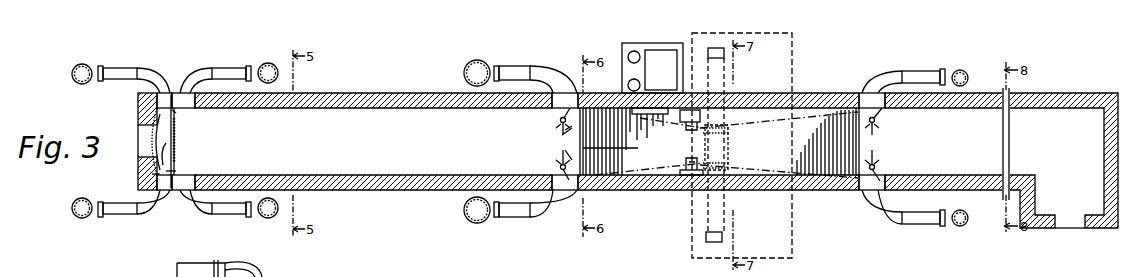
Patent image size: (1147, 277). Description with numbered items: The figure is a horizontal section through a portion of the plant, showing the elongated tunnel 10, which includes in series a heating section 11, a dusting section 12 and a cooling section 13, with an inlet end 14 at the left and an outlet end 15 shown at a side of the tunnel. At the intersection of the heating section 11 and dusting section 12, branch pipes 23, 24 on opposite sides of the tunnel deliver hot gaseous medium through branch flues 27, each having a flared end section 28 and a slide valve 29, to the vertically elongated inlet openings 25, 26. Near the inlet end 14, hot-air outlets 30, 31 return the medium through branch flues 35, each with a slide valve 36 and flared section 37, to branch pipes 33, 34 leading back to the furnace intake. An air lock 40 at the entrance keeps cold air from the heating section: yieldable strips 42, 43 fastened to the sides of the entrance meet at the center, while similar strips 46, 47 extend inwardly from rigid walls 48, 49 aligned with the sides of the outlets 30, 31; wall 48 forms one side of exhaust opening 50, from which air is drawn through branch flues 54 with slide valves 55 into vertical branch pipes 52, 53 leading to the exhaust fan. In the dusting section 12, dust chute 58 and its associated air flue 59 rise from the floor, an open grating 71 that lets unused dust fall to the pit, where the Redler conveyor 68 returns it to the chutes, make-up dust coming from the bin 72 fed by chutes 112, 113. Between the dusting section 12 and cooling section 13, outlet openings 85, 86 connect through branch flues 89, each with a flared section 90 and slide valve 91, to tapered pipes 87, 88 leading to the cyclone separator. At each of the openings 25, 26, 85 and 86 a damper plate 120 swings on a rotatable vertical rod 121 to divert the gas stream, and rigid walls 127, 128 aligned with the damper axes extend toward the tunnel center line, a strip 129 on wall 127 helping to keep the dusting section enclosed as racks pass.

The tunnel 10 is at (392, 93).
The heating section 11 is at (367, 173).
The dusting section 12 is at (640, 178).
The cooling section 13 is at (1050, 113).
The inlet end 14 is at (145, 146).
The outlet end 15 is at (1070, 222).
The branch pipe 23 is at (464, 70).
The branch pipe 24 is at (464, 212).
The inlet opening 25 is at (562, 92).
The inlet opening 26 is at (580, 190).
The branch flue 27 is at (517, 66).
The end section 28 is at (549, 66).
The slide valve 29 is at (497, 65).
The hot-air outlet 30 is at (182, 92).
The hot-air outlet 31 is at (168, 192).
The branch pipe 33 is at (268, 62).
The branch pipe 34 is at (268, 190).
The branch flue 35 is at (222, 68).
The slide valve 36 is at (248, 66).
The flared section 37 is at (188, 200).
The air lock 40 is at (178, 172).
The strip 42 is at (140, 126).
The strip 43 is at (145, 153).
The strip 46 is at (178, 136).
The strip 47 is at (176, 152).
The wall 48 is at (176, 113).
The wall 49 is at (160, 175).
The exhaust opening 50 is at (164, 92).
The branch pipe 52 is at (73, 68).
The branch pipe 53 is at (72, 204).
The branch flue 54 is at (125, 68).
The slide valve 55 is at (100, 66).
The dust chute 58 is at (684, 160).
The air flue 59 is at (690, 182).
The Redler conveyor 68 is at (722, 243).
The open grating 71 is at (622, 190).
The bin 72 is at (646, 48).
The outlet opening 85 is at (868, 190).
The outlet opening 86 is at (860, 95).
The pipe 87 is at (958, 227).
The pipe 88 is at (960, 70).
The branch flue 89 is at (916, 70).
The flared section 90 is at (870, 86).
The slide valve 91 is at (940, 66).
The chute 112 is at (628, 84).
The chute 113 is at (630, 50).
The damper plate 120 is at (566, 122).
The rotatable vertical rod 121 is at (570, 122).
The wall 127 is at (566, 156).
The wall 128 is at (571, 130).
The strip 129 is at (897, 144).